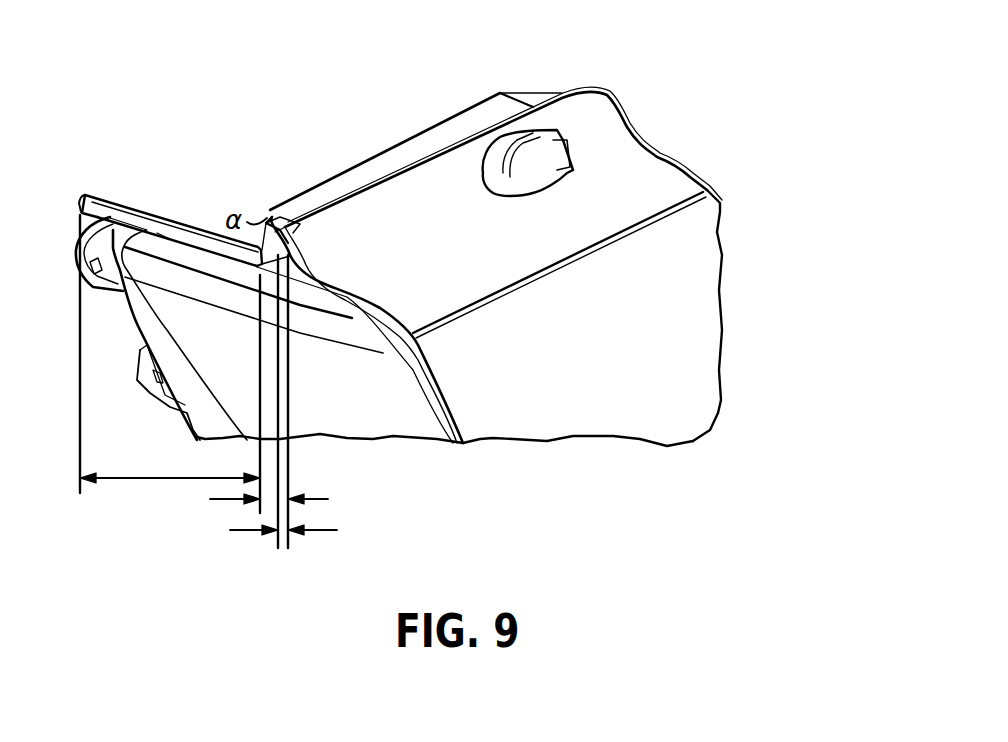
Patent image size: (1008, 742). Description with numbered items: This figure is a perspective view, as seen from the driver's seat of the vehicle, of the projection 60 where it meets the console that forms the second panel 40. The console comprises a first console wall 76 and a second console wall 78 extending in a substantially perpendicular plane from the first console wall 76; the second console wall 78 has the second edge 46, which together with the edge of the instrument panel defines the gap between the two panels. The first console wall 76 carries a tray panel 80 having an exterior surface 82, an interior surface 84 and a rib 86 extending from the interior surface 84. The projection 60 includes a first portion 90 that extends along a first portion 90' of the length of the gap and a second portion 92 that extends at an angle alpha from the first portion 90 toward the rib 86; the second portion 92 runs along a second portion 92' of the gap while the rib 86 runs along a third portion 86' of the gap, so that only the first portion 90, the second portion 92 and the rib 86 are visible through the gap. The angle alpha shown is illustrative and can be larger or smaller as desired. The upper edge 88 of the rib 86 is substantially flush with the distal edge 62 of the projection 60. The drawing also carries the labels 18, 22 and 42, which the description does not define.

The seat assembly 18 is at (683, 365).
The seat back 22 is at (374, 95).
The second panel 40 is at (440, 430).
The side panel 42 is at (339, 412).
The second edge 46 is at (188, 260).
The projection 60 is at (110, 220).
The distal edge 62 is at (85, 199).
The first console wall 76 is at (668, 275).
The second console wall 78 is at (373, 425).
The tray panel 80 is at (622, 180).
The exterior surface 82 is at (444, 260).
The interior surface 84 is at (568, 93).
The rib 86 is at (301, 169).
The upper edge 88 is at (403, 143).
The first portion 90 is at (161, 287).
The second portion 92 is at (269, 191).
The first portion of the length of the gap 90' is at (170, 392).
The second portion of the gap 92' is at (265, 436).
The third portion of the gap 86' is at (289, 441).